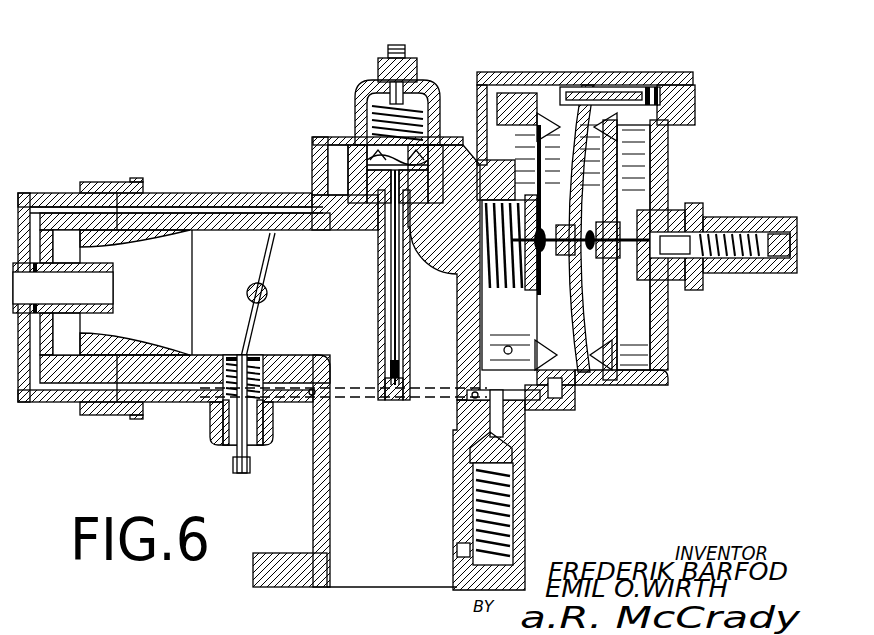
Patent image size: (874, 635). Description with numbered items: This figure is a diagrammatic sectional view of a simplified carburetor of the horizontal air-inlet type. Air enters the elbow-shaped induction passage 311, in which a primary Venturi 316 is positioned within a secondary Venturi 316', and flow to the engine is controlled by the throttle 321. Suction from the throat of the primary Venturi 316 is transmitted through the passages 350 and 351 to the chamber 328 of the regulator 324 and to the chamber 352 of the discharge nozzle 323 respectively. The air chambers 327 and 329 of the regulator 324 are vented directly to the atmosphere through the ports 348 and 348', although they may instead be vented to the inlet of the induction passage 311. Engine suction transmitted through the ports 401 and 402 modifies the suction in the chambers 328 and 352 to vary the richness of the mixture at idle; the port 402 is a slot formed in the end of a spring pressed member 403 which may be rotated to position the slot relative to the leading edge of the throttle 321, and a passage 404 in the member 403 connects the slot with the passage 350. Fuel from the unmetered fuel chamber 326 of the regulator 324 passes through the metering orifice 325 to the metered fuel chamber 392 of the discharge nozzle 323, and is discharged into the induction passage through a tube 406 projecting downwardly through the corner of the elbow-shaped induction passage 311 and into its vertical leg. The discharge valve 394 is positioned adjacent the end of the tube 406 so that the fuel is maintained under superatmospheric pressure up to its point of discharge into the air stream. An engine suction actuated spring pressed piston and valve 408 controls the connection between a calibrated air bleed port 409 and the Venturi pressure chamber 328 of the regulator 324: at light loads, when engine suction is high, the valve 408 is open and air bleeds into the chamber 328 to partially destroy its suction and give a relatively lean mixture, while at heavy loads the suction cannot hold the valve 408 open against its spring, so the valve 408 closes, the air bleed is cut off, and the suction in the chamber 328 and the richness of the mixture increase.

The induction passage 311 is at (293, 247).
The primary Venturi 316 is at (89, 288).
The secondary Venturi 316' is at (137, 292).
The throttle 321 is at (268, 272).
The discharge nozzle 323 is at (372, 85).
The regulator 324 is at (675, 200).
The metering orifice 325 is at (580, 80).
The unmetered fuel chamber 326 is at (643, 317).
The air chamber 327 is at (623, 108).
The Venturi pressure chamber 328 is at (553, 85).
The air chamber 329 is at (527, 130).
The port 348 is at (585, 402).
The port 348' is at (509, 282).
The passage 350 is at (180, 390).
The passage 351 is at (190, 210).
The chamber 352 is at (420, 97).
The metered fuel chamber 392 is at (313, 185).
The discharge valve 394 is at (413, 380).
The port 401 is at (329, 230).
The port 402 is at (255, 357).
The spring pressed member 403 is at (226, 455).
The passage 404 is at (292, 360).
The tube 406 is at (408, 318).
The spring pressed piston and valve 408 is at (510, 480).
The calibrated air bleed port 409 is at (517, 450).